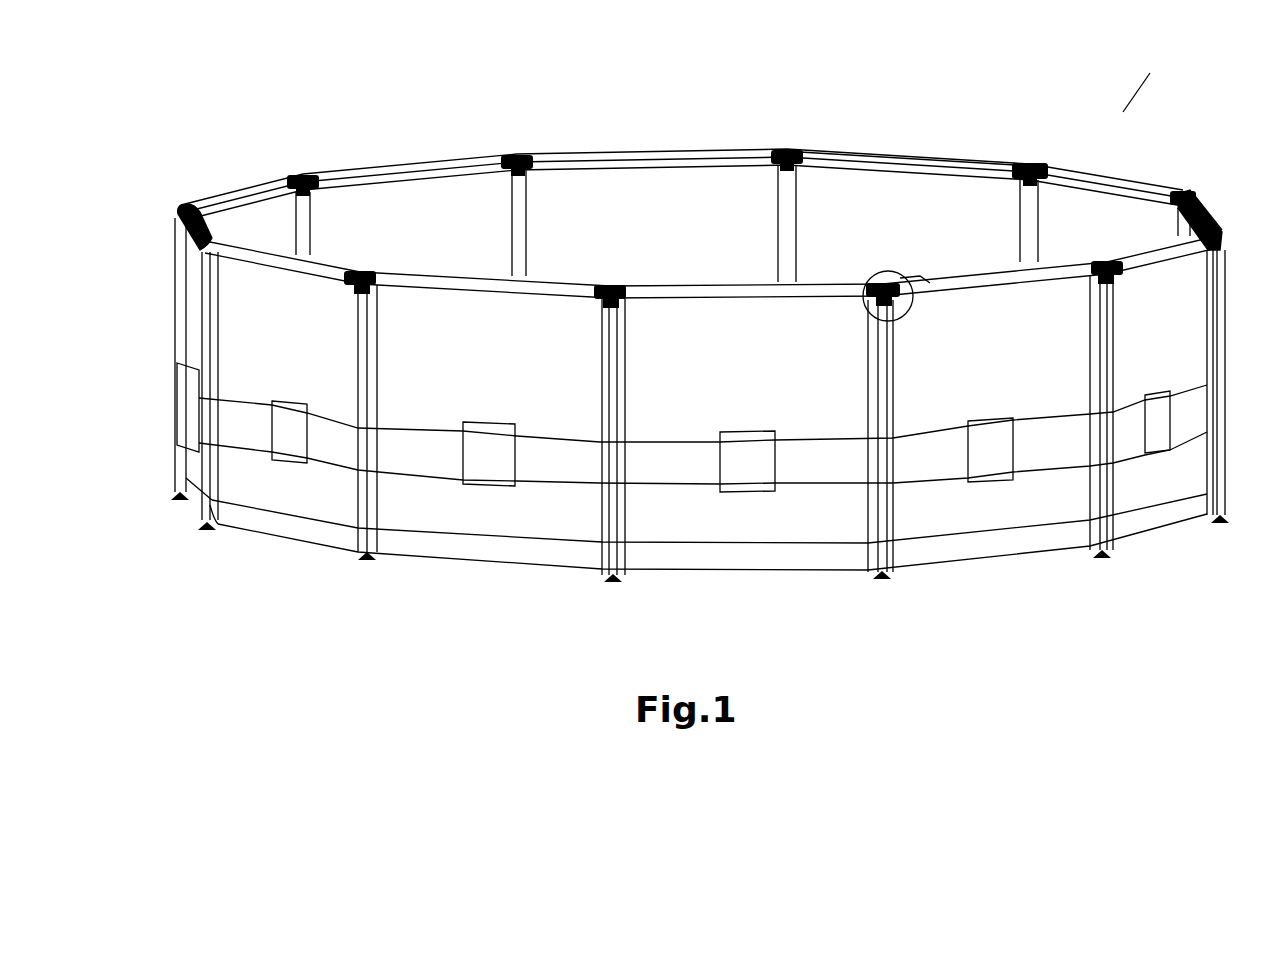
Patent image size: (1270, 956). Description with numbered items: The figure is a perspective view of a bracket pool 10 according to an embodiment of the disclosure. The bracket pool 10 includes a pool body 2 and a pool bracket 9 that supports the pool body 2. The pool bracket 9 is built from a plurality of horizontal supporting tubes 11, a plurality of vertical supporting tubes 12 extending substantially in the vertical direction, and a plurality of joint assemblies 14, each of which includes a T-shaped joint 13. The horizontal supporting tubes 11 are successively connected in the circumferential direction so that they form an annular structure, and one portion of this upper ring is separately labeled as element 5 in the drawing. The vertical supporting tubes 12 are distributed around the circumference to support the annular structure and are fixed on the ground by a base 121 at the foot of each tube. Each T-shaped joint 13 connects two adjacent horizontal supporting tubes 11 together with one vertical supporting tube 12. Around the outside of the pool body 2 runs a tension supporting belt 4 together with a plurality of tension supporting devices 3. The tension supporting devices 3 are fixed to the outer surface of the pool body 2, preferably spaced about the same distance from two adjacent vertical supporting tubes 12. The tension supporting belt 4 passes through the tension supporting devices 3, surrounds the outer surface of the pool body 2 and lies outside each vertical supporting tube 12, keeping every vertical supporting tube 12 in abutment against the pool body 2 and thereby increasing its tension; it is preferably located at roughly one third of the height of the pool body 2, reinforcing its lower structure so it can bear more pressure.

The bracket pool 10 is at (1123, 112).
The pool body 2 is at (855, 168).
The top rail segment 5 is at (957, 168).
The T-shaped joint 13 is at (790, 150).
The horizontal supporting tube 11 is at (1005, 165).
The joint assembly 14 is at (876, 268).
The pool bracket 9 is at (930, 248).
The vertical supporting tube 12 is at (893, 433).
The base 121 is at (880, 573).
The tension supporting device 3 is at (992, 463).
The tension supporting belt 4 is at (1073, 438).